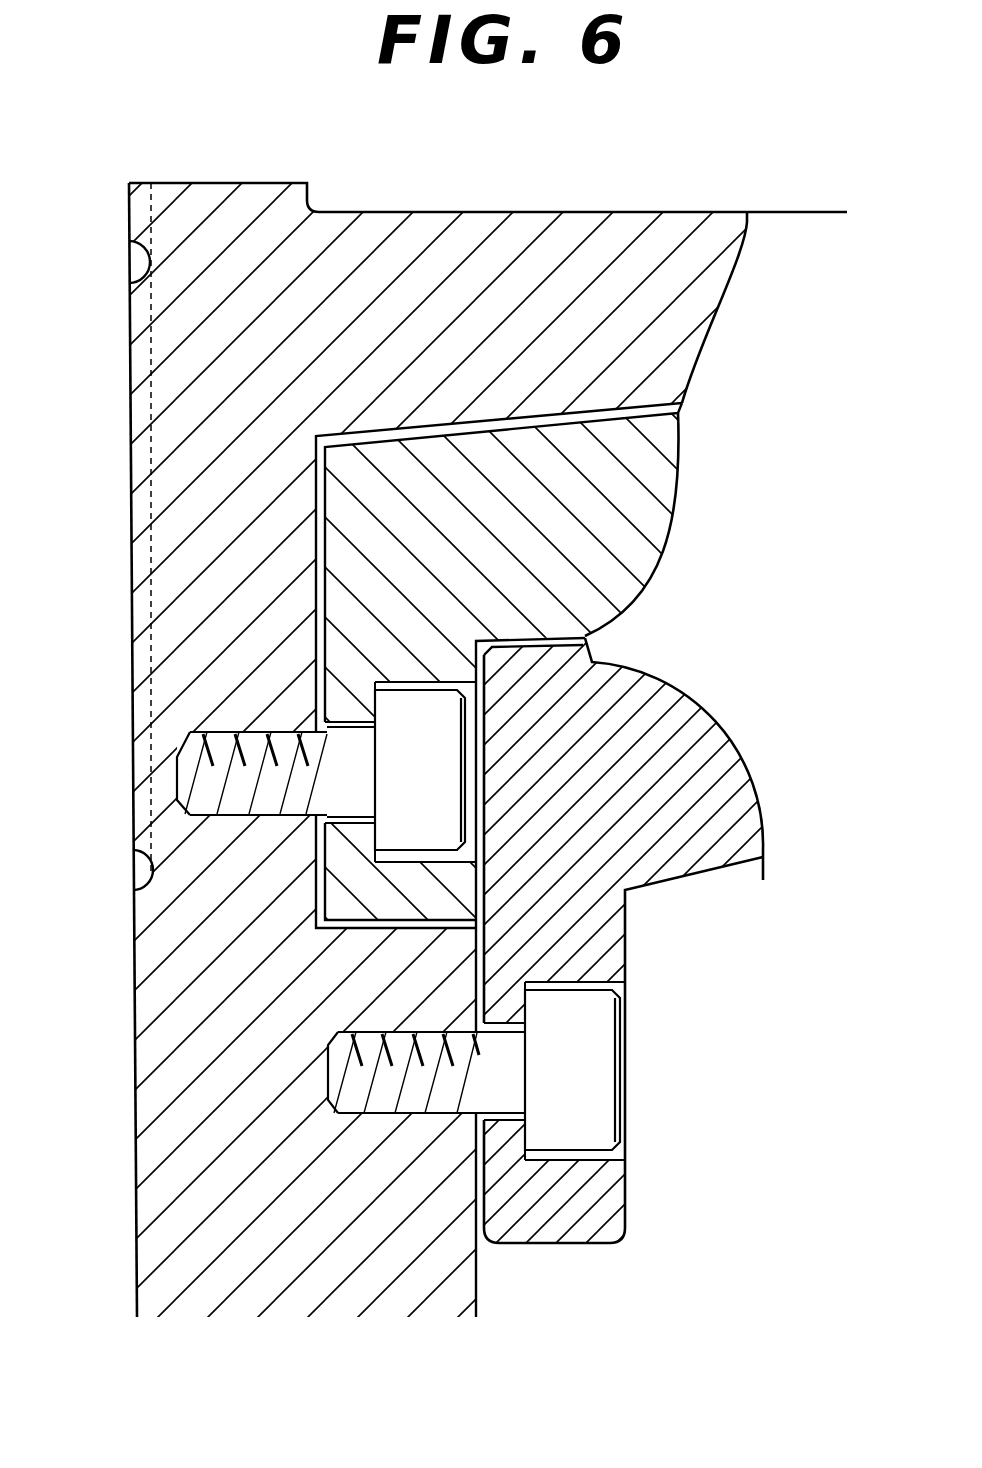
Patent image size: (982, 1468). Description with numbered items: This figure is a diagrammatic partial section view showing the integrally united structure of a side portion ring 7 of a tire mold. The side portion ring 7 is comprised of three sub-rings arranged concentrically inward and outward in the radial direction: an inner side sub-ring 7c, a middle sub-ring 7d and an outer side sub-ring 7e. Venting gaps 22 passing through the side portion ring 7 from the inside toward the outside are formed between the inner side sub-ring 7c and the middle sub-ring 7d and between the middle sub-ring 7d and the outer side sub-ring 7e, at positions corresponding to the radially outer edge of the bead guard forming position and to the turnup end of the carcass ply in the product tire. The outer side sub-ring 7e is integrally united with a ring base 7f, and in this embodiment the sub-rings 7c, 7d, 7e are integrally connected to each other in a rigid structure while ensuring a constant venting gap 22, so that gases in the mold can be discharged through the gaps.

The side portion ring 7 is at (447, 728).
The outer side sub-ring 7e is at (447, 290).
The ring base 7f is at (207, 1140).
The middle sub-ring 7d is at (627, 500).
The inner side sub-ring 7c is at (690, 760).
The venting gap 22 is at (550, 415).